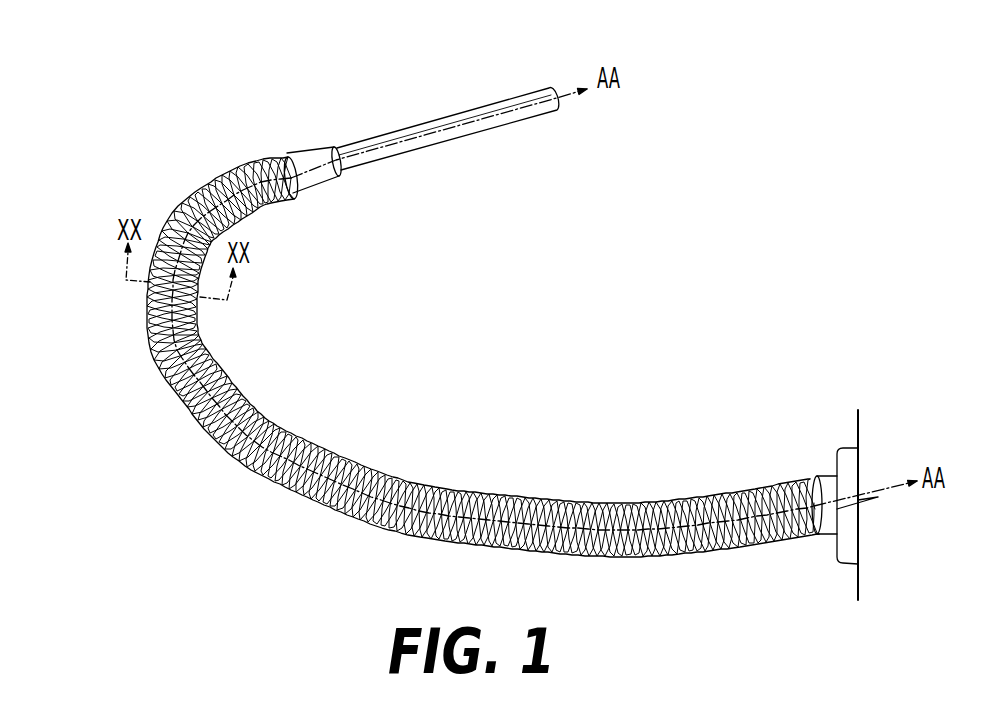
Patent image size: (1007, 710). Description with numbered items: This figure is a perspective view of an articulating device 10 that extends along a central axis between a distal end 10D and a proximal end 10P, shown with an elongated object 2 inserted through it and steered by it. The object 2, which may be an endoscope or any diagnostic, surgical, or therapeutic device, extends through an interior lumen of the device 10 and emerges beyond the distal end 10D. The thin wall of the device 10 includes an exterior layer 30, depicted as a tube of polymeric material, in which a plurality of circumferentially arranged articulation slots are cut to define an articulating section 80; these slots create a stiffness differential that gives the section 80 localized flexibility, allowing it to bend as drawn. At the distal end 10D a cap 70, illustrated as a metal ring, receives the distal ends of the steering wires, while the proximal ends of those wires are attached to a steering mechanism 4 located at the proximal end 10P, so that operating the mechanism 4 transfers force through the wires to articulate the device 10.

The elongated object 2 is at (482, 104).
The steering mechanism 4 is at (851, 552).
The articulating device 10 is at (119, 345).
The distal end 10D is at (340, 150).
The proximal end 10P is at (817, 478).
The exterior layer 30 is at (210, 187).
The cap 70 is at (333, 178).
The articulating section 80 is at (200, 340).